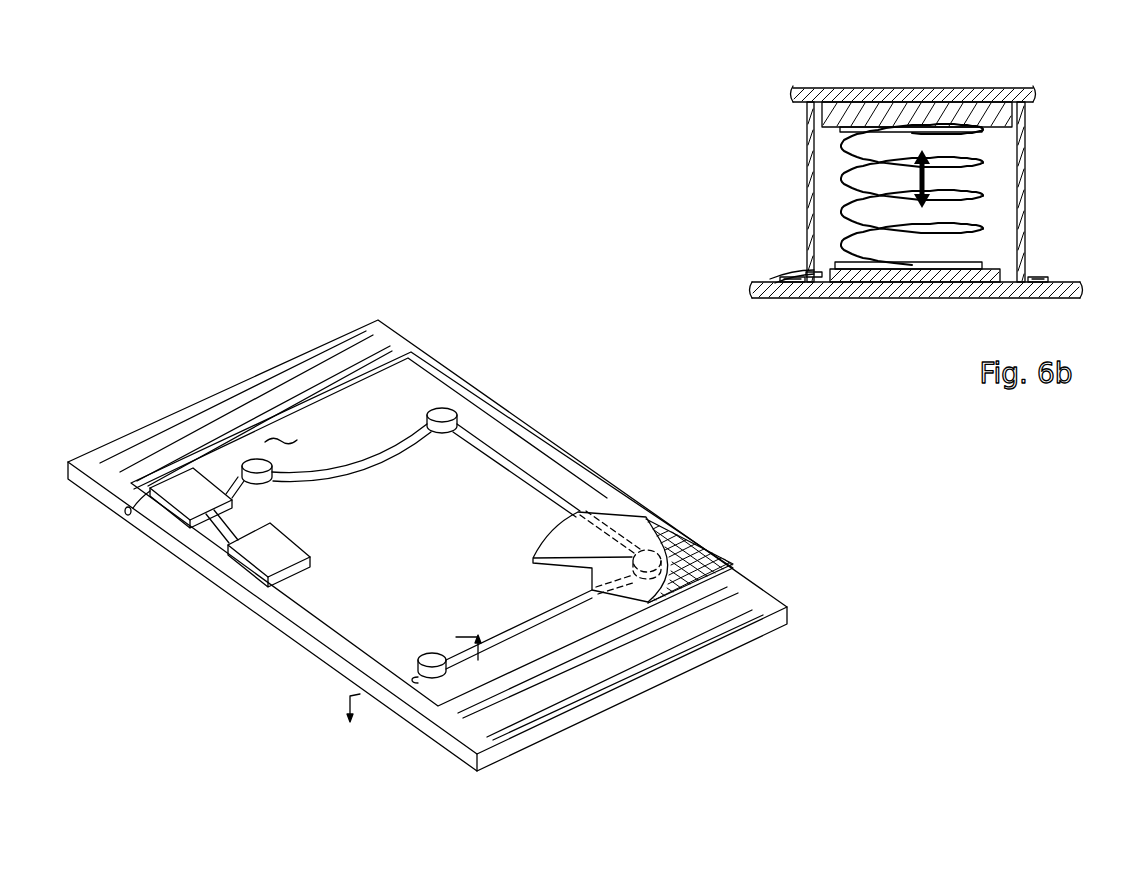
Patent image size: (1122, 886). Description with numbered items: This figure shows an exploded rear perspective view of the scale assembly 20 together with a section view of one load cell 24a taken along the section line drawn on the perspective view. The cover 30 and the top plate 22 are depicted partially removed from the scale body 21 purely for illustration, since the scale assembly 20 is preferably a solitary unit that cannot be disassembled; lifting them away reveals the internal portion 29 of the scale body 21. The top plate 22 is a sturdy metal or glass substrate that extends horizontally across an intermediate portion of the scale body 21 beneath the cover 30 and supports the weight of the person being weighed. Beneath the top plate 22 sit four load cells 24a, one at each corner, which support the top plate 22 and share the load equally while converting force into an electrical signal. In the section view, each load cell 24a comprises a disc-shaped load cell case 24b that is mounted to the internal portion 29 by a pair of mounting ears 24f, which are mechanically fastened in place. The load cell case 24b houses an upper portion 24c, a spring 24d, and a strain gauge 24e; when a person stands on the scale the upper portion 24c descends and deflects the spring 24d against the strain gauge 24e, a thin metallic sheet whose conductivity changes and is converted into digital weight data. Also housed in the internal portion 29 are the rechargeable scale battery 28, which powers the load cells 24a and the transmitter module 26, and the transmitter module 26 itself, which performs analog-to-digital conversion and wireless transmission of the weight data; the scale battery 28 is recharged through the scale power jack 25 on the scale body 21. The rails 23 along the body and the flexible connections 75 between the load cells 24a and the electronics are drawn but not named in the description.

In FIG. 6a, the scale assembly 20 is at (117, 261).
In FIG. 6a, the scale body 21 is at (446, 362).
In FIG. 6b, the scale body 21 is at (883, 295).
In FIG. 6a, the top plate 22 is at (638, 507).
In FIG. 6b, the top plate 22 is at (888, 90).
In FIG. 6a, the grooved rail 23 is at (389, 330).
In FIG. 6a, the load cell 24a is at (270, 476).
In FIG. 6b, the load cell 24a is at (693, 109).
In FIG. 6b, the load cell case 24b is at (807, 181).
In FIG. 6b, the upper portion 24c is at (836, 113).
In FIG. 6b, the spring 24d is at (1012, 213).
In FIG. 6b, the strain gauge 24e is at (1001, 270).
In FIG. 6b, the mounting ears 24f is at (790, 286).
In FIG. 6a, the scale power jack 25 is at (120, 513).
In FIG. 6a, the transmitter module 26 is at (258, 553).
In FIG. 6a, the scale battery 28 is at (175, 497).
In FIG. 6a, the internal portion 29 is at (289, 437).
In FIG. 6a, the cover 30 is at (718, 554).
In FIG. 6a, the flexible cable 75 is at (468, 444).
In FIG. 6b, the flexible cable 75 is at (794, 269).